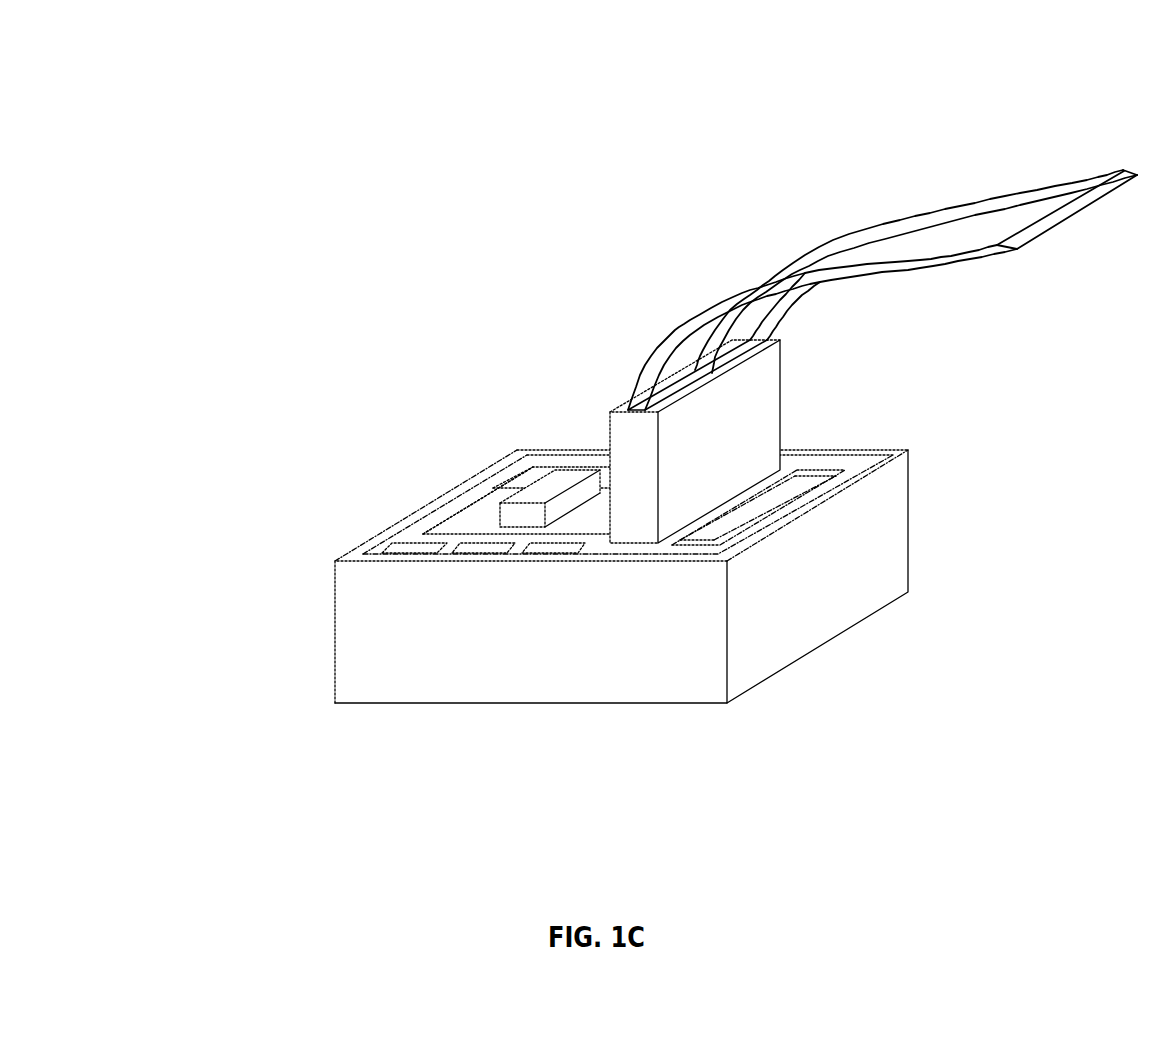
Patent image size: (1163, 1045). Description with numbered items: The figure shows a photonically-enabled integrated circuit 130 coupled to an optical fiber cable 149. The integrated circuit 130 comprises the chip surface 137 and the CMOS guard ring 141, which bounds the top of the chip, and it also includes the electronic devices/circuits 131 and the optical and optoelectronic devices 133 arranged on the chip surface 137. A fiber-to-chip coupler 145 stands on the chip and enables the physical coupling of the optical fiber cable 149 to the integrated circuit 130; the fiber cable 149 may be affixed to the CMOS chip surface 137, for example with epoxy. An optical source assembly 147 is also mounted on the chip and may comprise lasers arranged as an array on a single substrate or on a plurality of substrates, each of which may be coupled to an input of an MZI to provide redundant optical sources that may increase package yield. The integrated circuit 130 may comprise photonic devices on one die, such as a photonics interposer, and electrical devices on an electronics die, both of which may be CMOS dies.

The photonically-enabled integrated circuit 130 is at (180, 112).
The electronic devices/circuits 131 is at (750, 522).
The optical and optoelectronic devices 133 is at (490, 533).
The chip surface 137 is at (473, 502).
The CMOS guard ring 141 is at (895, 452).
The fiber-to-chip coupler 145 is at (738, 452).
The optical source assembly 147 is at (558, 480).
The optical fiber cable 149 is at (940, 200).